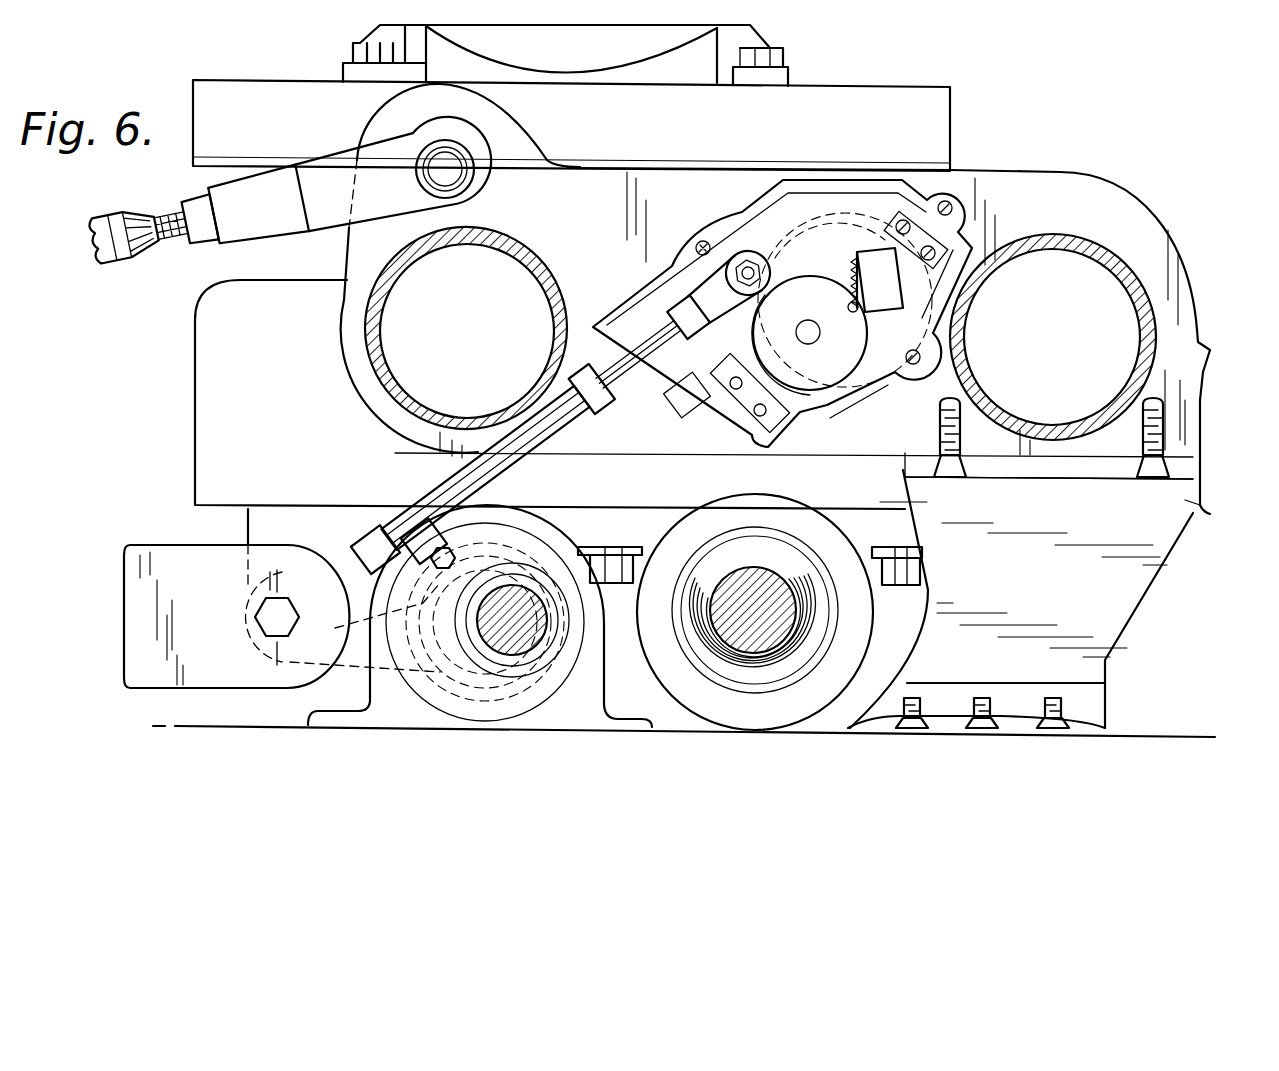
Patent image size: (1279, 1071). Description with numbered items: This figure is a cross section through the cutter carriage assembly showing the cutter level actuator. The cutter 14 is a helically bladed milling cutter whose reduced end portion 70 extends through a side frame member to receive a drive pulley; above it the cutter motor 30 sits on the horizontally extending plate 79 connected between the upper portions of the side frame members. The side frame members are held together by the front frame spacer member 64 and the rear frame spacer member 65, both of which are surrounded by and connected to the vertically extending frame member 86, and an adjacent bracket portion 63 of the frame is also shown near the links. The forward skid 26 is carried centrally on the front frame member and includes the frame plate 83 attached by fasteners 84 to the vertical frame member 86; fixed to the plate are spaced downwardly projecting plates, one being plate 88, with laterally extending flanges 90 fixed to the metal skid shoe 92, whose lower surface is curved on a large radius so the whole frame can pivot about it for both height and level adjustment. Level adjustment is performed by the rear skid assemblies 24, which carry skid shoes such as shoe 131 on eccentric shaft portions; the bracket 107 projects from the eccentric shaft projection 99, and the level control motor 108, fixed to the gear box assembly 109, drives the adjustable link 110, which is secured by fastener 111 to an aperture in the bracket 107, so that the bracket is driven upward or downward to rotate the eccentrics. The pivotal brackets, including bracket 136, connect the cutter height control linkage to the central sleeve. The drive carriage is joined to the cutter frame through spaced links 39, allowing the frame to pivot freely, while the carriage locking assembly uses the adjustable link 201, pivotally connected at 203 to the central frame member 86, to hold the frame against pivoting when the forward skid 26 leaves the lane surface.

The cutter 14 is at (716, 712).
The rear skid assemblies 24 is at (530, 748).
The forward skid 26 is at (1165, 588).
The cutter motor 30 is at (587, 60).
The links 39 is at (157, 668).
The support bracket 63 is at (288, 520).
The front frame spacer member 64 is at (1140, 296).
The rear frame spacer member 65 is at (372, 335).
The reduced end portion 70 is at (772, 637).
The horizontally extending plate 79 is at (935, 118).
The frame plate 83 is at (1105, 470).
The fasteners 84 is at (962, 434).
The vertically extending frame member 86 is at (1116, 210).
The downwardly projecting plate 88 is at (1112, 610).
The laterally extending flanges 90 is at (1020, 708).
The skid shoe 92 is at (943, 737).
The shaft projection 99 is at (530, 640).
The bracket 107 is at (470, 545).
The level control motor 108 is at (838, 225).
The gear box assembly 109 is at (848, 395).
The adjustable link 110 is at (622, 377).
The fastener 111 is at (425, 548).
The skid shoe 131 is at (375, 720).
The bracket 136 is at (343, 621).
The adjustable link 201 is at (108, 262).
The pivotal connection 203 is at (455, 180).